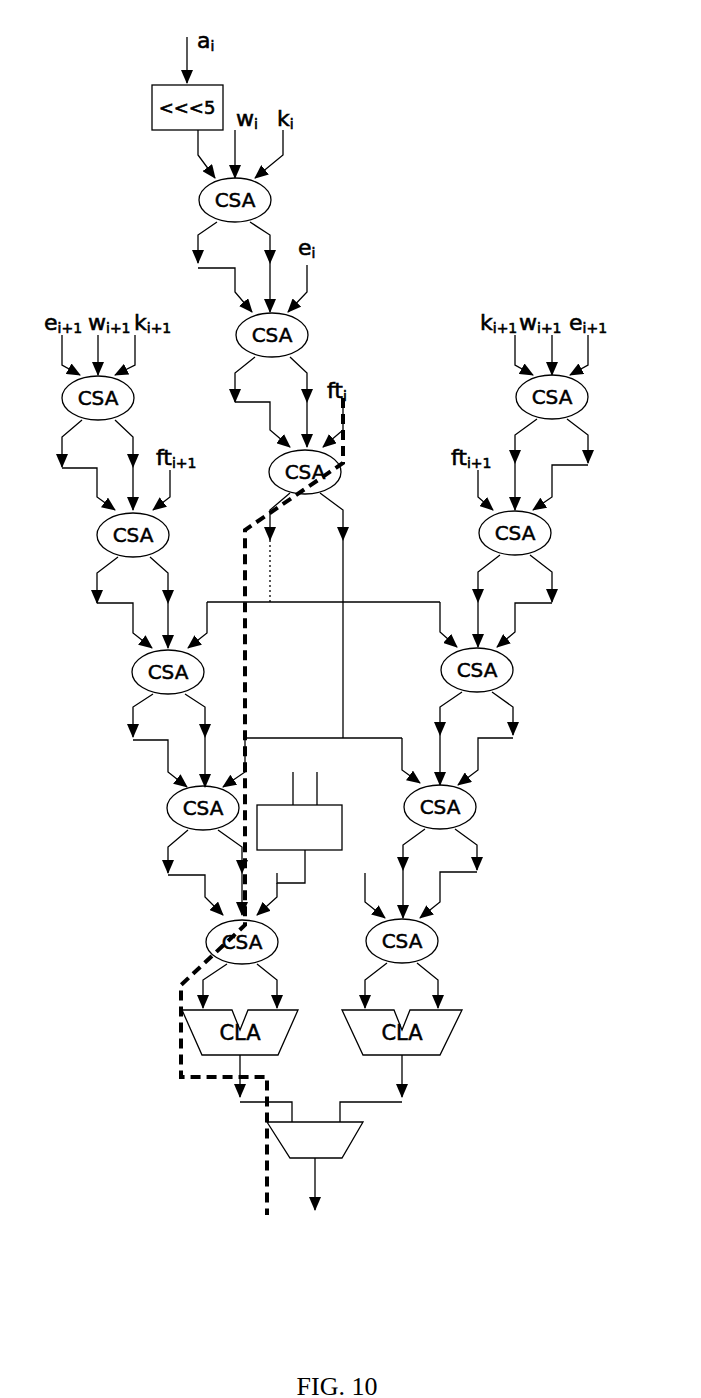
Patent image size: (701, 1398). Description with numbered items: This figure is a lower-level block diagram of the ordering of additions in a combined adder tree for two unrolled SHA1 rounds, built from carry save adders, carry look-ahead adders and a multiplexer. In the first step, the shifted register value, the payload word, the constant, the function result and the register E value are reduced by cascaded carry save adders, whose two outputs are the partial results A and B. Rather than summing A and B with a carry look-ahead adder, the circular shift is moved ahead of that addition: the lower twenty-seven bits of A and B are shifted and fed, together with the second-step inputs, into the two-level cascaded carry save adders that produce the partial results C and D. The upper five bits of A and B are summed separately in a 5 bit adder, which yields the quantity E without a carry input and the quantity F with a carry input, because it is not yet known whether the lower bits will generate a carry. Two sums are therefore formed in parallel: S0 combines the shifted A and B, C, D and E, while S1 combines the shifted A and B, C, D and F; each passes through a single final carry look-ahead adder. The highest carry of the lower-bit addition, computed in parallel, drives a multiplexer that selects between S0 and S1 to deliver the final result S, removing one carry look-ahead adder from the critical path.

The first cascaded CSA output A is at (259, 692).
The second cascaded CSA output B is at (387, 692).
The first Step 2 CSA output C is at (322, 601).
The second Step 2 CSA output D is at (321, 601).
The 5-bit adder 5 is at (299, 827).
The five-bit sum without carry E is at (281, 886).
The five-bit sum with carry F is at (364, 898).
The first candidate result S0 is at (266, 1088).
The second candidate result S1 is at (393, 1088).
The final result S is at (327, 1184).